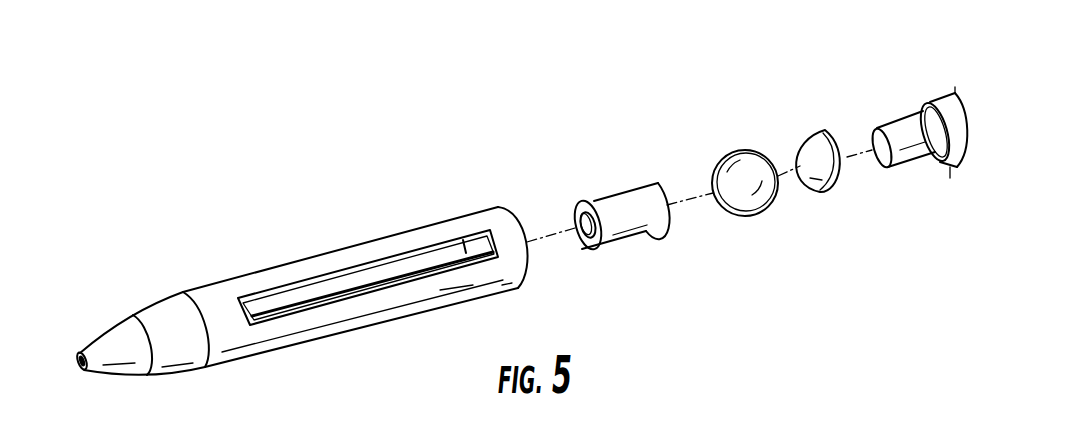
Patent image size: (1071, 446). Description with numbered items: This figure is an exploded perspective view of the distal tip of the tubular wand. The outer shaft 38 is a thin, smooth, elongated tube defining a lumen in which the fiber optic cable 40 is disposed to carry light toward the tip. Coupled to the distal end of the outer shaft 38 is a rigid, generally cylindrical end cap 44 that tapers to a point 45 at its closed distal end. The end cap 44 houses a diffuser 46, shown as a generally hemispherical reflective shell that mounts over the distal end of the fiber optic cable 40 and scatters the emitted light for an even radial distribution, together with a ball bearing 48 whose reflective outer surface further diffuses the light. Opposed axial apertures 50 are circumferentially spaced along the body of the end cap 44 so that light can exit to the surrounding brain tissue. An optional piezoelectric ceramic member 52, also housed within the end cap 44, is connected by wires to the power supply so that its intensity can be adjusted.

The outer shaft 38 is at (952, 162).
The fiber optic cable 40 is at (908, 118).
The end cap 44 is at (323, 253).
The point 45 is at (78, 353).
The diffuser 46 is at (818, 140).
The ball bearing 48 is at (760, 198).
The apertures 50 is at (397, 250).
The piezoelectric ceramic member 52 is at (633, 195).